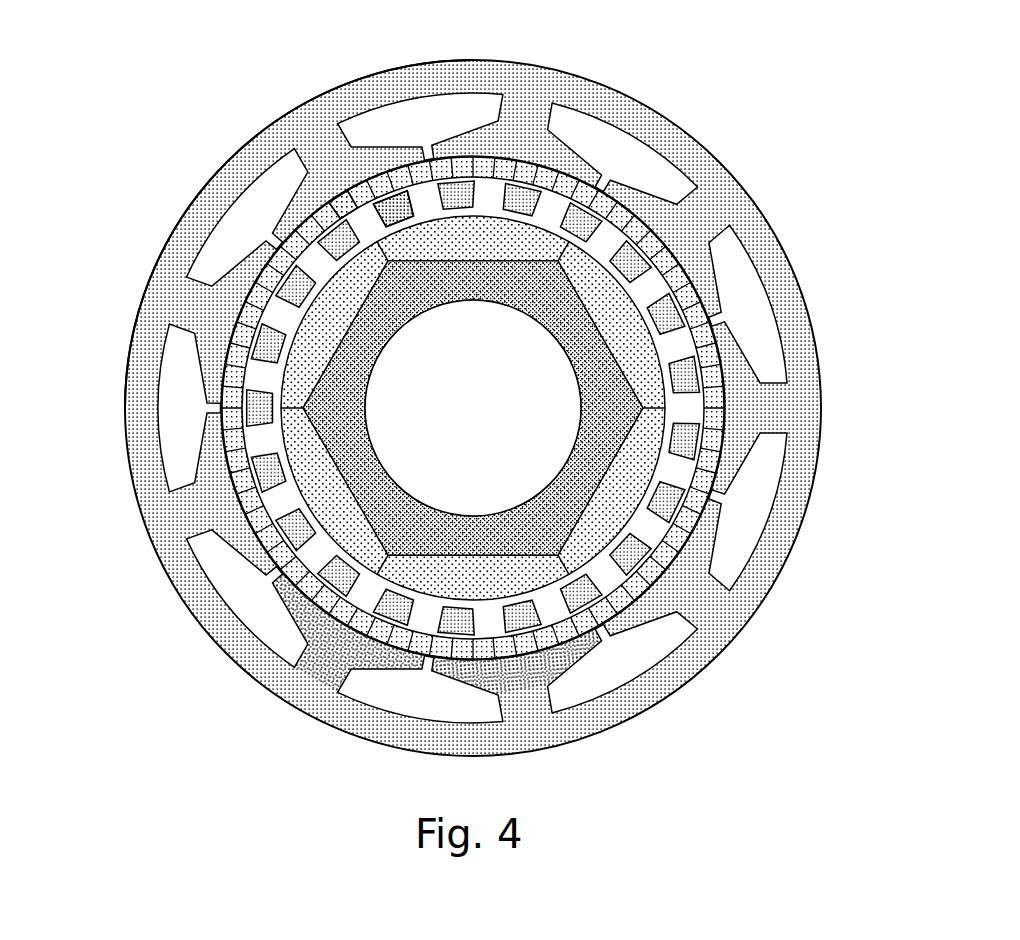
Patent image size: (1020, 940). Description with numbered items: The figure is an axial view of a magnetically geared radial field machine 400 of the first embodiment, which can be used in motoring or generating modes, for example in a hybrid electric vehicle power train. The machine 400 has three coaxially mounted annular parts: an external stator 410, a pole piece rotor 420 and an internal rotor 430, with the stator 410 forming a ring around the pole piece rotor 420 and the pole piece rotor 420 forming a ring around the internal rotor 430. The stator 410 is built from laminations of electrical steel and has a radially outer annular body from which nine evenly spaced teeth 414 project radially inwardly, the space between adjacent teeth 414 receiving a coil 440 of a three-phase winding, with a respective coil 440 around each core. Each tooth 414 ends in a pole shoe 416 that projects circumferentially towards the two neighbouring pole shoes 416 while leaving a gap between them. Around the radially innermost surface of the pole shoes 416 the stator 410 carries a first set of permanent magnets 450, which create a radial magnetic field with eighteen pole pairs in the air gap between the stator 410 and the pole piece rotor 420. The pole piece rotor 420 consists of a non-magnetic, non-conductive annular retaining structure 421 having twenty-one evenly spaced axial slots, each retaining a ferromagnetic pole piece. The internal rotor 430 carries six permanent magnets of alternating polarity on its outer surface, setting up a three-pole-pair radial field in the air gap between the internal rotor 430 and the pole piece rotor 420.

The magnetically geared radial field machine 400 is at (490, 402).
The external stator 410 is at (473, 428).
The teeth 414 is at (325, 673).
The pole shoe 416 is at (522, 670).
The pole piece rotor 420 is at (707, 385).
The retaining structure 421 is at (363, 220).
The internal rotor 430 is at (623, 505).
The coil 440 is at (250, 225).
The first set of permanent magnets 450 is at (237, 490).